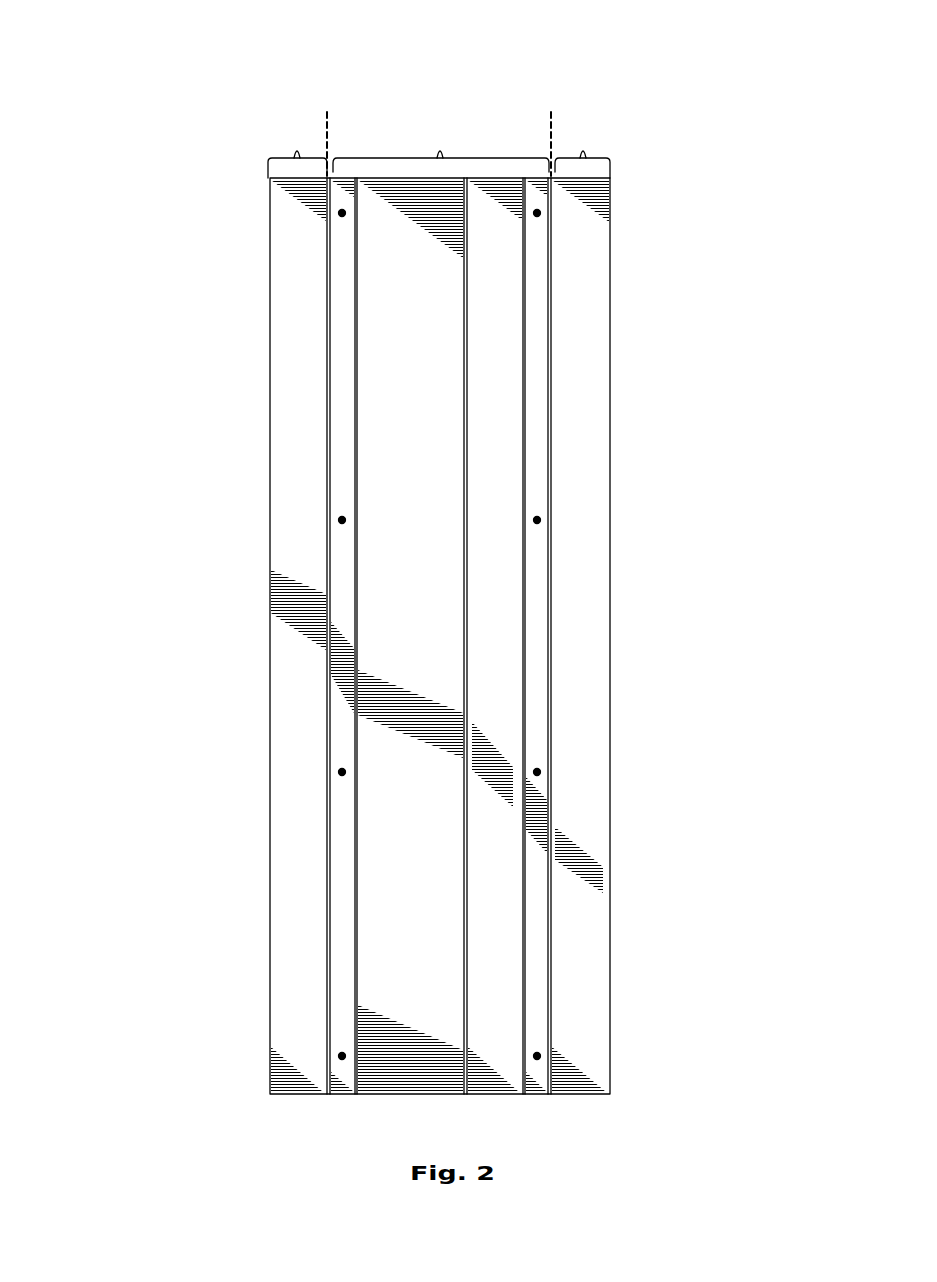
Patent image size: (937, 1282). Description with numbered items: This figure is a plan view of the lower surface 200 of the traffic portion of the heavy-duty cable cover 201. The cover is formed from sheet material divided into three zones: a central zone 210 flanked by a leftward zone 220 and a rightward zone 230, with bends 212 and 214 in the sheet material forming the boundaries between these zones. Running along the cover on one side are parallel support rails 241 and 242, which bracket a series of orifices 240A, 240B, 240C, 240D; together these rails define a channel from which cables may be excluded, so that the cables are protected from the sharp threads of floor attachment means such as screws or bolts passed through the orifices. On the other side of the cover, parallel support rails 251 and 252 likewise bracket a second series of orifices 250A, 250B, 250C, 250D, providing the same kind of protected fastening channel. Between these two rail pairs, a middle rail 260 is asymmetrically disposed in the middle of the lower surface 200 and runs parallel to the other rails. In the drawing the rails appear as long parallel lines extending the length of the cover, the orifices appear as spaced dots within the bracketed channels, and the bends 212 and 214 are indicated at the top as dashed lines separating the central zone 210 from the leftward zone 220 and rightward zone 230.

The lower surface 200 is at (350, 636).
The heavy-duty cable cover 201 is at (638, 365).
The central zone 210 is at (441, 93).
The bend 212 is at (615, 95).
The bend 214 is at (268, 90).
The leftward zone 220 is at (637, 111).
The rightward zone 230 is at (250, 105).
The orifice 240A is at (651, 184).
The orifice 240B is at (651, 488).
The orifice 240C is at (651, 740).
The orifice 240D is at (651, 1023).
The support rail 241 is at (653, 636).
The support rail 242 is at (624, 636).
The orifice 250A is at (223, 179).
The orifice 250B is at (219, 485).
The orifice 250C is at (220, 735).
The orifice 250D is at (220, 1018).
The support rail 251 is at (218, 636).
The support rail 252 is at (247, 636).
The middle rail 260 is at (508, 636).